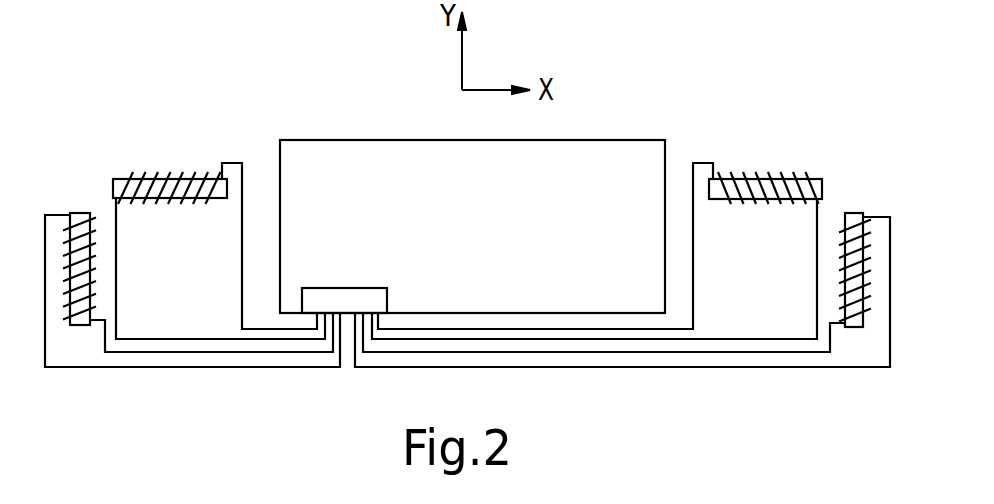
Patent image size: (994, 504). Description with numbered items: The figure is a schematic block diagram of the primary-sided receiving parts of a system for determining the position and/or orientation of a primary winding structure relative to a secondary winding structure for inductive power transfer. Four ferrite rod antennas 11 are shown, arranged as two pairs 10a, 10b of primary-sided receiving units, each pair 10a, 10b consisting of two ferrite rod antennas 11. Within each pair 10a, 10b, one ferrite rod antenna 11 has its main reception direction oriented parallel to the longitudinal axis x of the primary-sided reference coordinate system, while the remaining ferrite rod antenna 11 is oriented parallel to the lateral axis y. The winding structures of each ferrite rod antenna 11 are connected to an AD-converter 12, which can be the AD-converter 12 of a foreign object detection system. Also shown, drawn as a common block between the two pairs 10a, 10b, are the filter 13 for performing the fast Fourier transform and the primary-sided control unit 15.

The pair of primary-sided receiving units 10a is at (92, 108).
The pair of primary-sided receiving units 10b is at (865, 113).
The ferrite rod antenna 11 is at (75, 213).
The AD-converter 12 is at (387, 288).
The filter 13 is at (501, 191).
The primary-sided control unit 15 is at (664, 140).